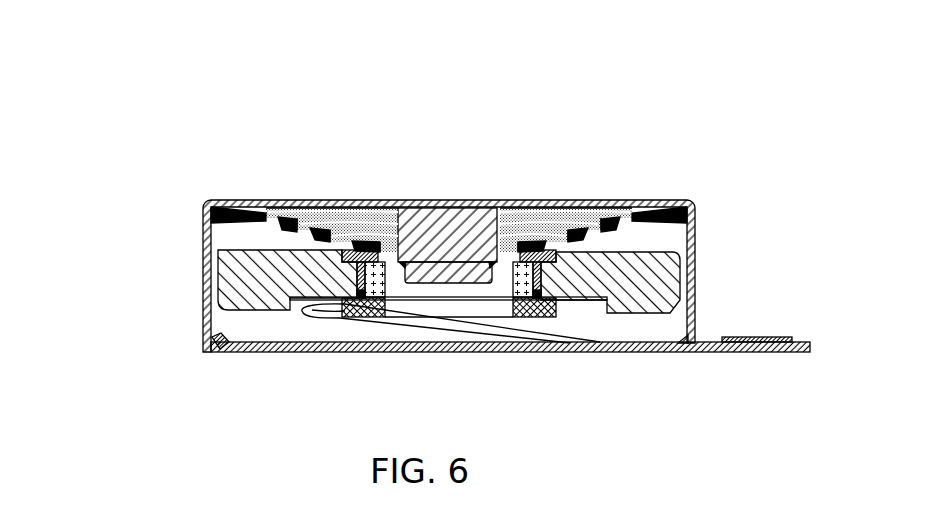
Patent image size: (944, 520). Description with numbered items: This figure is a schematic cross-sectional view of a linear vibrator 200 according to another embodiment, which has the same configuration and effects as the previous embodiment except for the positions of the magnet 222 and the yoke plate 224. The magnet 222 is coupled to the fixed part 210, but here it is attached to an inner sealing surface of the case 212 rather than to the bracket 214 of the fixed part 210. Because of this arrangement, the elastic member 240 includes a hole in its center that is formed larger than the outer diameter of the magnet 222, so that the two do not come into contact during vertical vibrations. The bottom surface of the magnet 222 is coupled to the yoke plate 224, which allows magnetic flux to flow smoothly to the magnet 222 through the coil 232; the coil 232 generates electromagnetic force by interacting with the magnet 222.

The linear vibrator 200 is at (500, 45).
The fixed part 210 is at (105, 298).
The case 212 is at (203, 313).
The bracket 214 is at (213, 352).
The magnet 222 is at (468, 222).
The yoke plate 224 is at (355, 241).
The coil 232 is at (380, 292).
The elastic member 240 is at (680, 207).